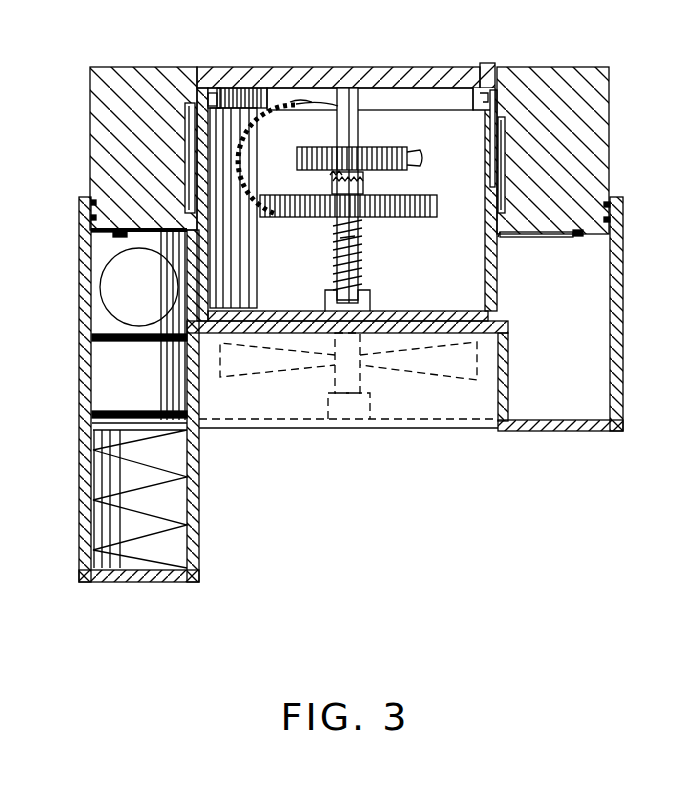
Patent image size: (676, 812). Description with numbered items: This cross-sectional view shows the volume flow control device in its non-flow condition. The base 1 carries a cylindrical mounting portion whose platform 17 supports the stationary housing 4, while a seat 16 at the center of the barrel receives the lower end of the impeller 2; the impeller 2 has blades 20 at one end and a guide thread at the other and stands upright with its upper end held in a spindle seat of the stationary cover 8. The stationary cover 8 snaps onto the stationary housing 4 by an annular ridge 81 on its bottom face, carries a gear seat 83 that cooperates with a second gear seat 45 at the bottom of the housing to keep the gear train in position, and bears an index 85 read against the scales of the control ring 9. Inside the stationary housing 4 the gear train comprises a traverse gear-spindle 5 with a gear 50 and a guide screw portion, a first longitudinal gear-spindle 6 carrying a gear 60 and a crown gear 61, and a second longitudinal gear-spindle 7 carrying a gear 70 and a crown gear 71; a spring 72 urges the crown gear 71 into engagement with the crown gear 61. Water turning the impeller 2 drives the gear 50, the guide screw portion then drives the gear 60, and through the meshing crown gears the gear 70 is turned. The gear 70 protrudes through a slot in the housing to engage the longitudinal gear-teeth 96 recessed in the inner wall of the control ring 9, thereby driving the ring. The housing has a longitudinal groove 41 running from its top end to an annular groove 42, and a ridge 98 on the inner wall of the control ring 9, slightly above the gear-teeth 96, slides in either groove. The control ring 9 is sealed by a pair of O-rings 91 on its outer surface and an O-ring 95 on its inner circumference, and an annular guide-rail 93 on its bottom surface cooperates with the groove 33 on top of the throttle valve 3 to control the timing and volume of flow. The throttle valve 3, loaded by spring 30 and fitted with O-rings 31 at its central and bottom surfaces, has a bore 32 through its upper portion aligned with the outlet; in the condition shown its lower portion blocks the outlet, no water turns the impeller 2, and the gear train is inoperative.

The base 1 is at (618, 300).
The impeller 2 is at (358, 378).
The throttle valve 3 is at (101, 377).
The stationary housing 4 is at (197, 104).
The traverse gear-spindle 5 is at (418, 158).
The first longitudinal gear-spindle 6 is at (358, 126).
The second longitudinal gear-spindle 7 is at (358, 260).
The stationary cover 8 is at (432, 73).
The control ring 9 is at (611, 106).
The seat 16 is at (330, 412).
The platform 17 is at (268, 338).
The blades 20 is at (450, 373).
The spring 30 is at (128, 462).
The O-rings 31 is at (92, 415).
The bore 32 is at (105, 277).
The groove 33 is at (117, 232).
The longitudinal groove 41 is at (496, 110).
The annular groove 42 is at (198, 178).
The gear seat 45 is at (362, 292).
The gear 50 is at (297, 105).
The gear 60 is at (288, 158).
The crown gear 61 is at (363, 176).
The gear 70 is at (430, 220).
The crown gear 71 is at (328, 186).
The spring 72 is at (337, 243).
The annular ridge 81 is at (210, 105).
The gear seat 83 is at (362, 100).
The index 85 is at (488, 65).
The O-rings 91 is at (612, 218).
The annular guide-rail 93 is at (580, 238).
The O-ring 95 is at (500, 238).
The longitudinal gear-teeth 96 is at (532, 238).
The ridge 98 is at (499, 106).